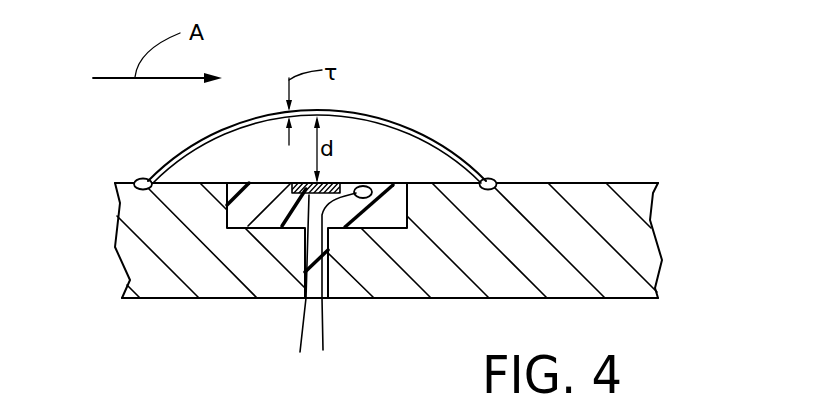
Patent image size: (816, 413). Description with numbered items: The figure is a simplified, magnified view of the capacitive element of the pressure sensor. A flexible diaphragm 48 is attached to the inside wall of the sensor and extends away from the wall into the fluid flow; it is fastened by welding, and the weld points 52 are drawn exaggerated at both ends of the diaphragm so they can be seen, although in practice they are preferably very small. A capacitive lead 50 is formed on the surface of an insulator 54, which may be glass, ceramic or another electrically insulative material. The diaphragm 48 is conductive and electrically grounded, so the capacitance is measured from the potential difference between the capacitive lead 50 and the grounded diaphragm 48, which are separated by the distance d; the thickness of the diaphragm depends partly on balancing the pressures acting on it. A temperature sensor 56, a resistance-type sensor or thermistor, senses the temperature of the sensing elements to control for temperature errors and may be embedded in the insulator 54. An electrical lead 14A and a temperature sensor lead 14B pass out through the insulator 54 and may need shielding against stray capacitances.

The electrical lead 14A is at (301, 334).
The temperature sensor lead 14B is at (321, 323).
The flexible diaphragm 48 is at (373, 114).
The capacitive lead 50 is at (333, 183).
The weld points 52 is at (141, 178).
The insulator 54 is at (247, 208).
The temperature sensor 56 is at (372, 189).